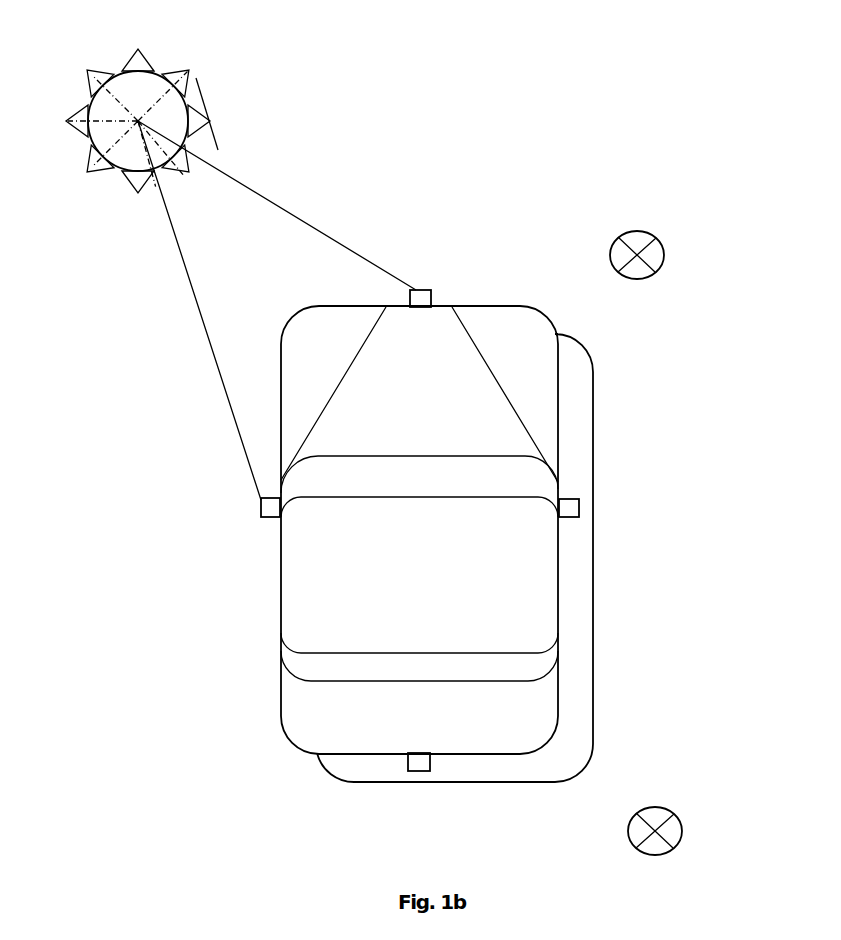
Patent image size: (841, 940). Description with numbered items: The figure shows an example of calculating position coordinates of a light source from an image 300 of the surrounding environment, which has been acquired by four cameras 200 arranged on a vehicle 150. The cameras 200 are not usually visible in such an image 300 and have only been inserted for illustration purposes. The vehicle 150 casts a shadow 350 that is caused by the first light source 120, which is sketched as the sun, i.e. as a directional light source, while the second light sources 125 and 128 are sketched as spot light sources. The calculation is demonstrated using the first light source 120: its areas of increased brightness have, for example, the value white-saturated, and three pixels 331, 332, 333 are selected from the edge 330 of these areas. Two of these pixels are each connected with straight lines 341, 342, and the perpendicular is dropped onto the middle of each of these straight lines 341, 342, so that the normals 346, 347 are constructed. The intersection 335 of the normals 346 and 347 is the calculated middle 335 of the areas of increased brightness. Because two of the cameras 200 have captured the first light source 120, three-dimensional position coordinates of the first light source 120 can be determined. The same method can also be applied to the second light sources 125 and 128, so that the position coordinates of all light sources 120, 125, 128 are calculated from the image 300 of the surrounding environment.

The first light source 120 is at (256, 92).
The second light source 125 is at (673, 217).
The second light source 128 is at (684, 787).
The vehicle 150 is at (453, 219).
The cameras 200 is at (432, 298).
The image of the surrounding environment 300 is at (566, 169).
The shadow 350 is at (583, 650).
The edge 330 is at (88, 108).
The pixel 331 is at (162, 74).
The pixel 332 is at (206, 118).
The pixel 333 is at (128, 186).
The intersection 335 is at (70, 124).
The straight line 341 is at (160, 73).
The straight line 342 is at (120, 172).
The normal 346 is at (92, 157).
The normal 347 is at (98, 75).